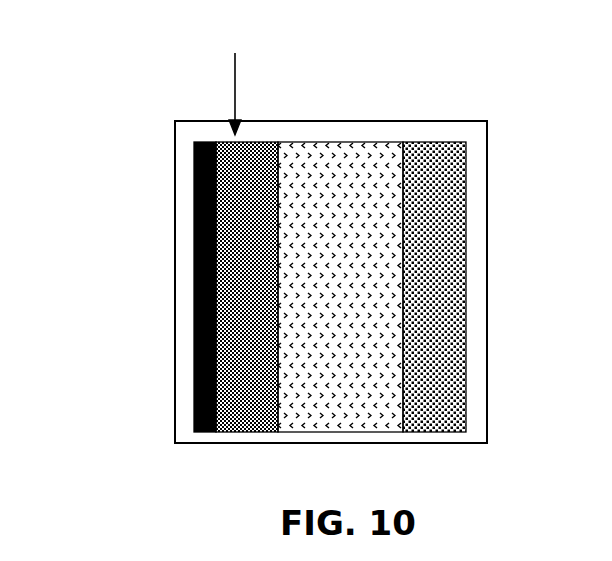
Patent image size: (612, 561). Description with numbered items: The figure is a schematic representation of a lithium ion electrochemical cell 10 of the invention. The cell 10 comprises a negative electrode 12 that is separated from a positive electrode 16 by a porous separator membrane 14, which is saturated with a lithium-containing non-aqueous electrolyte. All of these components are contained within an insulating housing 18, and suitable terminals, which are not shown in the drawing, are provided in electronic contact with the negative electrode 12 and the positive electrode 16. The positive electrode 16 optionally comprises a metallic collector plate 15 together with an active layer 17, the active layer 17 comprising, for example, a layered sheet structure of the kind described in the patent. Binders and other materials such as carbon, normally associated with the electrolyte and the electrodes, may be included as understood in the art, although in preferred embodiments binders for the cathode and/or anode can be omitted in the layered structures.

The lithium ion electrochemical cell 10 is at (120, 260).
The negative electrode 12 is at (444, 160).
The porous separator membrane 14 is at (320, 160).
The metallic collector plate 15 is at (196, 142).
The positive electrode 16 is at (234, 75).
The active layer 17 is at (257, 160).
The insulating housing 18 is at (487, 182).